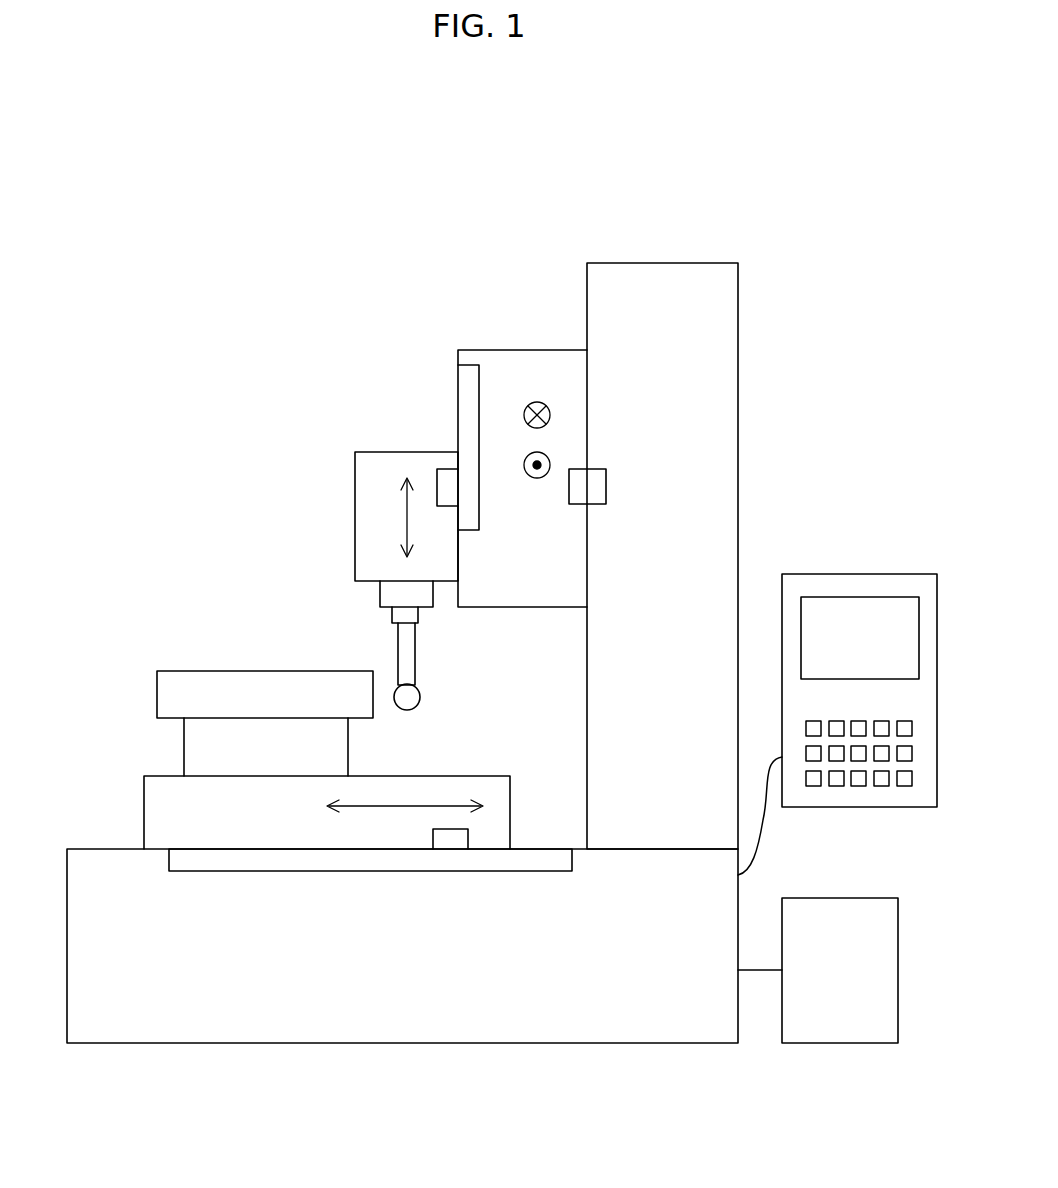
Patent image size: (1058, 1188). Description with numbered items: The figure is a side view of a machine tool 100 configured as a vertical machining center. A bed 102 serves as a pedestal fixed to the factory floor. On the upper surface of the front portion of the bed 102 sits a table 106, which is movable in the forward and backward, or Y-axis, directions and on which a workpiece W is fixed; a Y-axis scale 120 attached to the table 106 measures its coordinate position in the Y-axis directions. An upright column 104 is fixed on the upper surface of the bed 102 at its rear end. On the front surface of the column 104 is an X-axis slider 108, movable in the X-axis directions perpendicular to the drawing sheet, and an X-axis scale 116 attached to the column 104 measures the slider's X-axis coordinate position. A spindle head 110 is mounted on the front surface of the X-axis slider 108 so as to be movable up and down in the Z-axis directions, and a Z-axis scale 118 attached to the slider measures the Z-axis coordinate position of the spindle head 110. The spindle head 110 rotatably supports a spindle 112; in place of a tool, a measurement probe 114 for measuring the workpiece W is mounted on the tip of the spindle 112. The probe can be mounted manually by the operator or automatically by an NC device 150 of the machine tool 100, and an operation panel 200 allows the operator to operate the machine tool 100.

The machine tool 100 is at (746, 230).
The bed 102 is at (617, 1031).
The column 104 is at (722, 383).
The table 106 is at (158, 798).
The X-axis slider 108 is at (523, 365).
The spindle head 110 is at (383, 467).
The spindle 112 is at (385, 595).
The measurement probe 114 is at (403, 642).
The X-axis scale 116 is at (606, 471).
The Z-axis scale 118 is at (468, 378).
The Y-axis scale 120 is at (409, 862).
The workpiece W is at (169, 695).
The operation panel 200 is at (871, 560).
The NC device 150 is at (826, 1045).